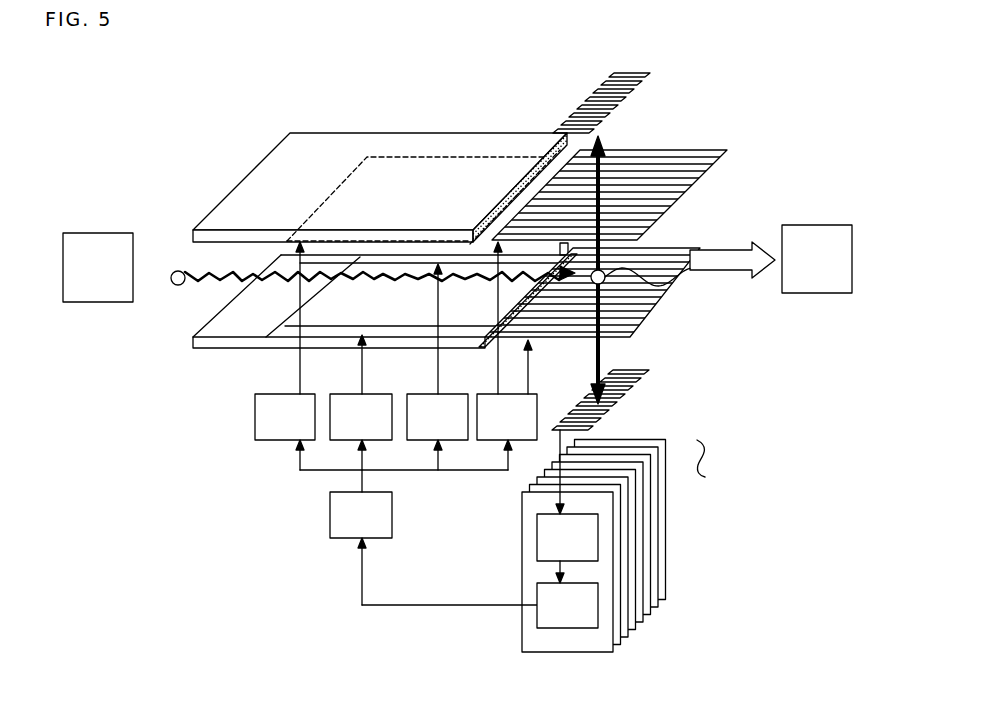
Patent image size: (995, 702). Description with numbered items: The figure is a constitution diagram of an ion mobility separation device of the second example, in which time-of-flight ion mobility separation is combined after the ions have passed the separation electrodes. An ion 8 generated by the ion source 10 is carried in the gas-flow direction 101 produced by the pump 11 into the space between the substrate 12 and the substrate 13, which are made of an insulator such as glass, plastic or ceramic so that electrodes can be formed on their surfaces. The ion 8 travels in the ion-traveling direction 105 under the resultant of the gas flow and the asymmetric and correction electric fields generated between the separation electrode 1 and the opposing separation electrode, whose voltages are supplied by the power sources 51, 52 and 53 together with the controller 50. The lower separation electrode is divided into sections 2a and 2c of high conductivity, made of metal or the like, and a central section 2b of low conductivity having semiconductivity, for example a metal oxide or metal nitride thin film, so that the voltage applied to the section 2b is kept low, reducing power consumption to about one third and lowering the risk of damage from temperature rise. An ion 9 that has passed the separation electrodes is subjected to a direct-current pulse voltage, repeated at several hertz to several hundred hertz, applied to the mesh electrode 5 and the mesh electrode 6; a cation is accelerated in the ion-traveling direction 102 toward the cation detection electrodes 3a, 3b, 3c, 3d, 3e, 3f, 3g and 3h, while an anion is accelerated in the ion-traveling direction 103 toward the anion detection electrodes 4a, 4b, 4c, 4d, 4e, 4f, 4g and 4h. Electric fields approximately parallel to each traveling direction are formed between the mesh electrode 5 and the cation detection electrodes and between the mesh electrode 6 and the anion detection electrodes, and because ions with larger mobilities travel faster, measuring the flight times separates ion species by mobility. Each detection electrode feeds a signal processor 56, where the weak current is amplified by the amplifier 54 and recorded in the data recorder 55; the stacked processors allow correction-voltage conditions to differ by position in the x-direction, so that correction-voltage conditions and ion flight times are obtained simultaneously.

The separation electrode 1 is at (423, 197).
The high-conductivity section of separation electrode 2a is at (293, 332).
The low-conductivity section of separation electrode 2b is at (360, 303).
The high-conductivity section of separation electrode 2c is at (423, 255).
The detection electrode (for cations) 3a is at (593, 428).
The detection electrode (for cations) 3b is at (601, 420).
The detection electrode (for cations) 3c is at (609, 412).
The detection electrode (for cations) 3d is at (617, 404).
The detection electrode (for cations) 3e is at (625, 396).
The detection electrode (for cations) 3f is at (633, 388).
The detection electrode (for cations) 3g is at (641, 380).
The detection electrode (for cations) 3h is at (649, 372).
The detection electrode (for anions) 4a is at (594, 131).
The detection electrode (for anions) 4b is at (602, 123).
The detection electrode (for anions) 4c is at (610, 115).
The detection electrode (for anions) 4d is at (618, 107).
The detection electrode (for anions) 4e is at (626, 99).
The detection electrode (for anions) 4f is at (634, 91).
The detection electrode (for anions) 4g is at (642, 83).
The detection electrode (for anions) 4h is at (650, 75).
The mesh electrode 5 is at (663, 315).
The mesh electrode 6 is at (693, 177).
The ion 8 is at (168, 287).
The ion 9 is at (660, 291).
The ion source 10 is at (98, 267).
The pump 11 is at (817, 259).
The substrate 12 is at (298, 157).
The substrate 13 is at (195, 349).
The controller 50 is at (416, 522).
The power source 51 is at (285, 341).
The power source 52 is at (361, 387).
The power source 53 is at (437, 352).
The amplifier 54 is at (537, 401).
The data recorder 55 is at (567, 594).
The signal processor 56 is at (615, 603).
The gas-flow direction 101 is at (710, 240).
The ion-traveling direction 102 is at (600, 355).
The ion-traveling direction 103 is at (600, 170).
The ion-traveling direction 105 is at (212, 262).